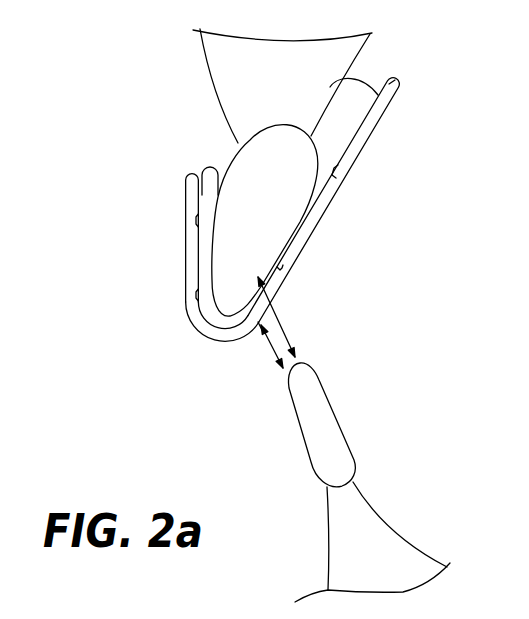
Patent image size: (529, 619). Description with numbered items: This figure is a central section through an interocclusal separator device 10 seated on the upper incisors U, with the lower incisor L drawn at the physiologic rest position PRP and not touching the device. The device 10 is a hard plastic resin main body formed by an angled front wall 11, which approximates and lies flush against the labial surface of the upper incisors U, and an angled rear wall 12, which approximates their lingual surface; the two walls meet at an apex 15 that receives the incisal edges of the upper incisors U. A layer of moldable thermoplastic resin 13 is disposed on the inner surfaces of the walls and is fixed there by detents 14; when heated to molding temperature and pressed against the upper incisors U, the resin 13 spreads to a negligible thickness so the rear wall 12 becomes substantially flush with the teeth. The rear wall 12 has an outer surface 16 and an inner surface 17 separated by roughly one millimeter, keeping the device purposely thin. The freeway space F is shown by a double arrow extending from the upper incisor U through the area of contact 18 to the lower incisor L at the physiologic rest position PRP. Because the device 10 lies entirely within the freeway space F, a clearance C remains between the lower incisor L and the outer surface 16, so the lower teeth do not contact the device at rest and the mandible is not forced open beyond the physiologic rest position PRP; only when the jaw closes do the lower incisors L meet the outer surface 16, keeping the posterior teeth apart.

The interocclusal separator device 10 is at (285, 203).
The front wall 11 is at (186, 262).
The rear wall 12 is at (396, 79).
The moldable thermoplastic resin 13 is at (337, 122).
The detents 14 is at (283, 265).
The apex 15 is at (190, 323).
The outer surface 16 is at (313, 232).
The inner surface 17 is at (376, 101).
The area of contact 18 is at (263, 325).
The upper incisors U is at (252, 182).
The freeway space F is at (264, 312).
The clearance C is at (273, 345).
The physiologic rest position PRP is at (301, 377).
The lower incisors L is at (322, 462).